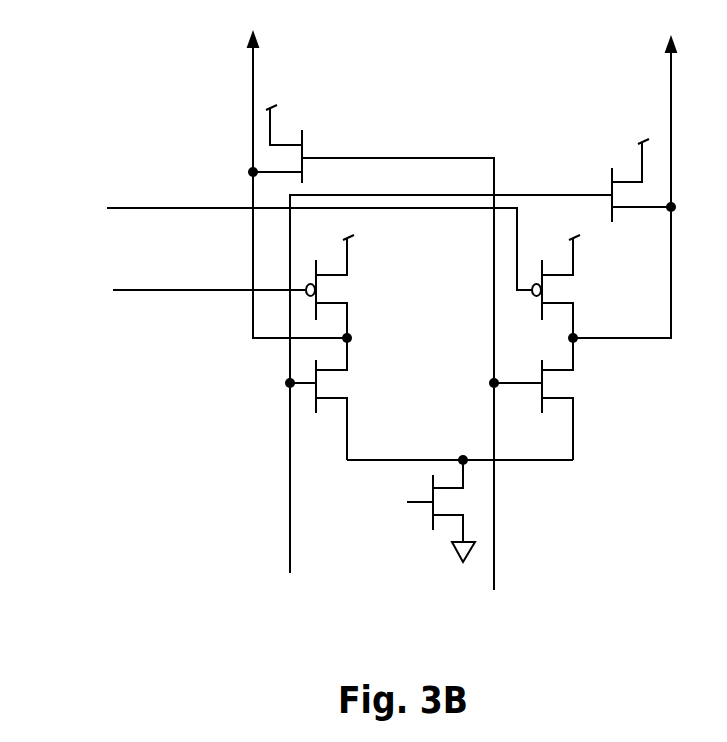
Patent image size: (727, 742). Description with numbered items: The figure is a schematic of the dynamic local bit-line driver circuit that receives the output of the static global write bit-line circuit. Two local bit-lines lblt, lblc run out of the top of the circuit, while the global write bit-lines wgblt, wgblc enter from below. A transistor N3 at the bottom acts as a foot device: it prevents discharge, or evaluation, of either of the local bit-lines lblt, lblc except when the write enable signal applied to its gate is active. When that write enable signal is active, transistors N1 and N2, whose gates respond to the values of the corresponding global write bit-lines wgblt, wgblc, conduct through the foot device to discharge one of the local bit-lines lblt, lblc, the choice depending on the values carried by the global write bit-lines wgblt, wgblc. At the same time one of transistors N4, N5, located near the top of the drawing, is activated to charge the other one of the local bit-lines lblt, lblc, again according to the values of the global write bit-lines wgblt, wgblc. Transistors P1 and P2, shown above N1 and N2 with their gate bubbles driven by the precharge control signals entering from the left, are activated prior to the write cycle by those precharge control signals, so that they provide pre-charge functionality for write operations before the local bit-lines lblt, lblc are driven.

The transistor N1 is at (334, 399).
The transistor N2 is at (547, 399).
The transistor N3 is at (460, 508).
The transistor N4 is at (376, 346).
The transistor N5 is at (478, 345).
The transistor P1 is at (343, 286).
The transistor P2 is at (567, 286).
The local bit-line lblc is at (300, 188).
The local bit-line lblt is at (622, 190).
The global write bit-line wgblt is at (294, 585).
The global write bit-line wgblc is at (501, 594).